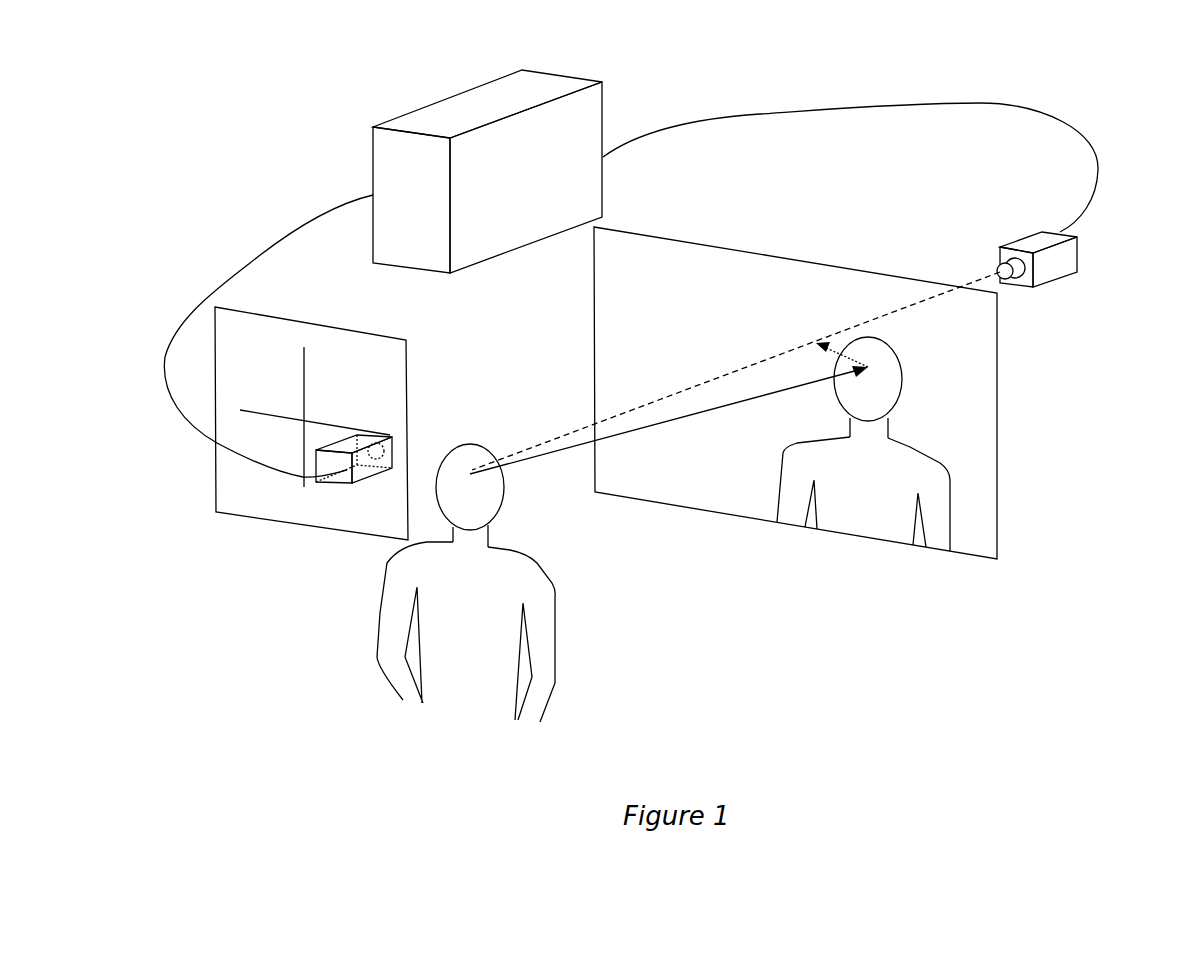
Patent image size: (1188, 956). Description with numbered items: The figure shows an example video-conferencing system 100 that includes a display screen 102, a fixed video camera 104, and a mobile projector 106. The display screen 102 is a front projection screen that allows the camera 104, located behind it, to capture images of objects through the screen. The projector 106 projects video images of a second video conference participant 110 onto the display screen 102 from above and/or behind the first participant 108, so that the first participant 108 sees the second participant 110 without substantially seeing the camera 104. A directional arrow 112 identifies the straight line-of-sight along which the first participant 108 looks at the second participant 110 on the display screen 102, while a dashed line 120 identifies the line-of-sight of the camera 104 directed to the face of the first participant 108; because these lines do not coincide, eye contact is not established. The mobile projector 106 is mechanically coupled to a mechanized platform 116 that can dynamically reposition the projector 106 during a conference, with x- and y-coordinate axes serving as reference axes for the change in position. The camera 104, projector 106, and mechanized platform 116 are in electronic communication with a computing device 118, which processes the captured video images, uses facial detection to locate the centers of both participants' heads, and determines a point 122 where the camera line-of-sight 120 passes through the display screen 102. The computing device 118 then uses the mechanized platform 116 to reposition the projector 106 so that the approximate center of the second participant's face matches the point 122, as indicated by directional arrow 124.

The video-conferencing system 100 is at (268, 102).
The display screen 102 is at (987, 420).
The fixed video camera 104 is at (1057, 283).
The mobile projector 106 is at (360, 432).
The first participant 108 is at (497, 646).
The second video conference participant 110 is at (892, 512).
The directional arrow 112 is at (533, 458).
The mechanized platform 116 is at (408, 355).
The computing device 118 is at (530, 232).
The dashed line 120 is at (982, 277).
The point 122 is at (818, 340).
The directional arrow 124 is at (823, 362).